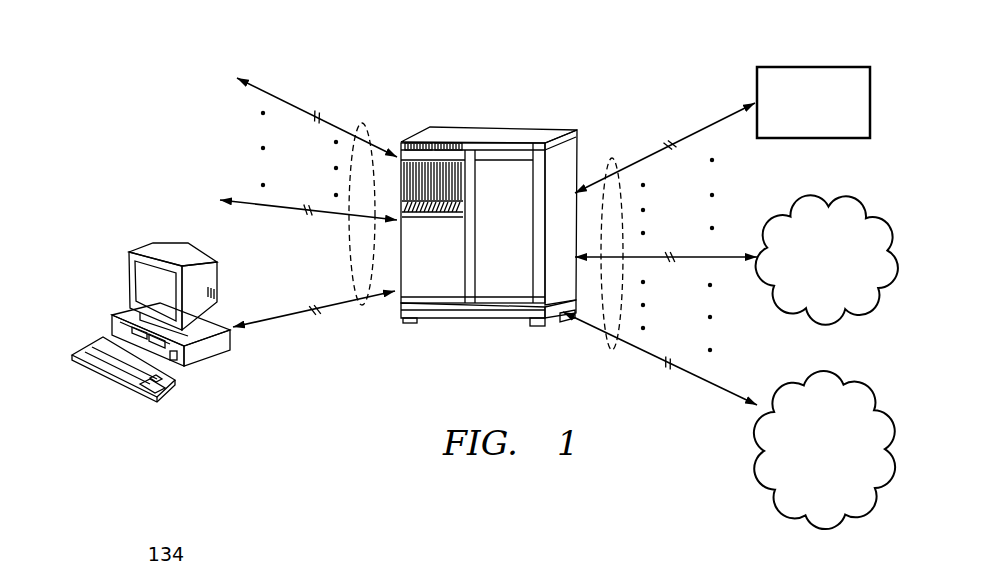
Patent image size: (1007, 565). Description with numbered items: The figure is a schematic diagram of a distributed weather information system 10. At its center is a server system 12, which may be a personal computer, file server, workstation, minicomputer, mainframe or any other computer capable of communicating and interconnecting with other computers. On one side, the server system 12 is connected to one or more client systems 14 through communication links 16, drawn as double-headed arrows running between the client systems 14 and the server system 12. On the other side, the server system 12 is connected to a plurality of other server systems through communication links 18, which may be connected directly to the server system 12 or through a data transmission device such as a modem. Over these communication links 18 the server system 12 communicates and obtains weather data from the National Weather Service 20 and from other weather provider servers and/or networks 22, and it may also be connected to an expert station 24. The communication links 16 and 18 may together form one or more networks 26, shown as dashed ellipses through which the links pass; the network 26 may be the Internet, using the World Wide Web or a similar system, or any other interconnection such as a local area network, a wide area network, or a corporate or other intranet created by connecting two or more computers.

The distributed weather information system 10 is at (410, 387).
The server system 12 is at (528, 134).
The client system 14 is at (167, 244).
The communication links 16 is at (276, 92).
The communication links 18 is at (717, 121).
The National Weather Service 20 is at (845, 528).
The weather provider servers and/or networks 22 is at (847, 195).
The expert station 24 is at (813, 67).
The network 26 is at (362, 124).